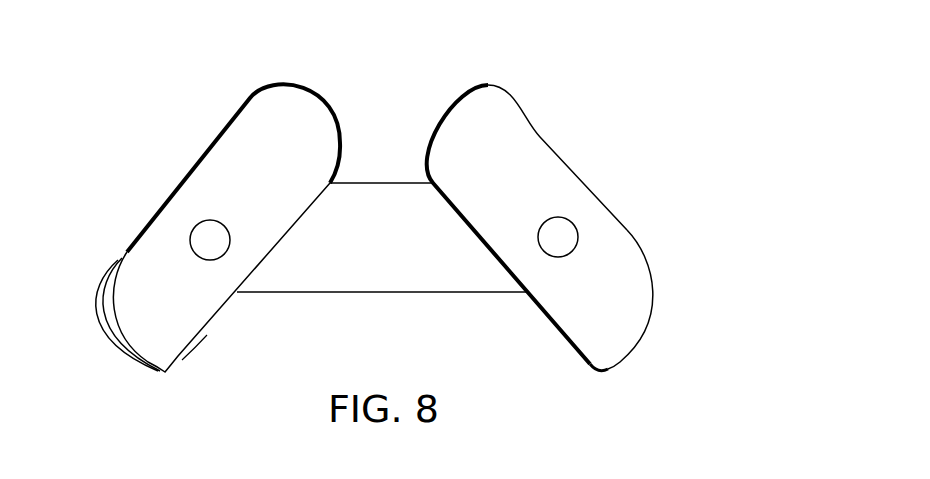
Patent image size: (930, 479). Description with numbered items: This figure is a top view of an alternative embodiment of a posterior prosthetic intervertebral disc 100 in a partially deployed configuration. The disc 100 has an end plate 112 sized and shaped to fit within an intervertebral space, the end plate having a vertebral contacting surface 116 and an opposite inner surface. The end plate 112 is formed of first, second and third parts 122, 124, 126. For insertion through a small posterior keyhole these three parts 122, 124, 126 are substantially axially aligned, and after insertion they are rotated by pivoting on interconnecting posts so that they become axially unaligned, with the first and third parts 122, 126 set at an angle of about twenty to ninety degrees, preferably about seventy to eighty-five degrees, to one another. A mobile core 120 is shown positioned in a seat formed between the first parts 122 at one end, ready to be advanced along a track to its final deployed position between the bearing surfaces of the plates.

The posterior prosthetic intervertebral disc 100 is at (660, 130).
The first end plate 112 is at (688, 282).
The vertebral contacting surface 116 is at (532, 137).
The mobile core 120 is at (107, 350).
The first part 122 is at (212, 311).
The second part 124 is at (393, 281).
The third part 126 is at (628, 335).